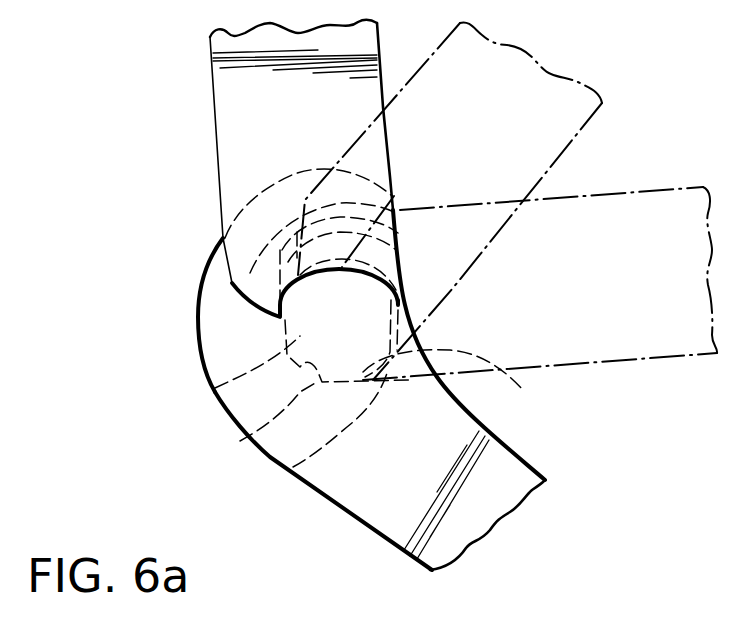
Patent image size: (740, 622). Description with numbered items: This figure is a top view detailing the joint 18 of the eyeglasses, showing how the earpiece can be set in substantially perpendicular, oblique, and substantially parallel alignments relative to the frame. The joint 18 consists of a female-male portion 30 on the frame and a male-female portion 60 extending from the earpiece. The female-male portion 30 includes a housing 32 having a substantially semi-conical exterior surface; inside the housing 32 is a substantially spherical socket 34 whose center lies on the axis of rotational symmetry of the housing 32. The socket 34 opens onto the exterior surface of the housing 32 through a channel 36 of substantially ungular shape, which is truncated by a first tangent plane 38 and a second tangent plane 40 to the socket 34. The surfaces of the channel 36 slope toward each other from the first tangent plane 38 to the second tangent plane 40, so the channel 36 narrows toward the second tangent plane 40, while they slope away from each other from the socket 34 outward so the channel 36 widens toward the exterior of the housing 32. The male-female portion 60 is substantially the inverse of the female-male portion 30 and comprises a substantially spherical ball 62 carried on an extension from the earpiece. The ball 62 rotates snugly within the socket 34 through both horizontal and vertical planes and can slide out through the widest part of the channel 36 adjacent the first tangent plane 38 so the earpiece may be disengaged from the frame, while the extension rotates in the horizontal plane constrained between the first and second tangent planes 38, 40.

The joint 18 is at (165, 184).
The female-male portion 30 is at (163, 375).
The housing 32 is at (198, 317).
The socket 34 is at (240, 441).
The channel 36 is at (452, 384).
The first tangent plane 38 is at (293, 467).
The second tangent plane 40 is at (280, 273).
The male-female portion 60 is at (196, 236).
The ball 62 is at (215, 388).